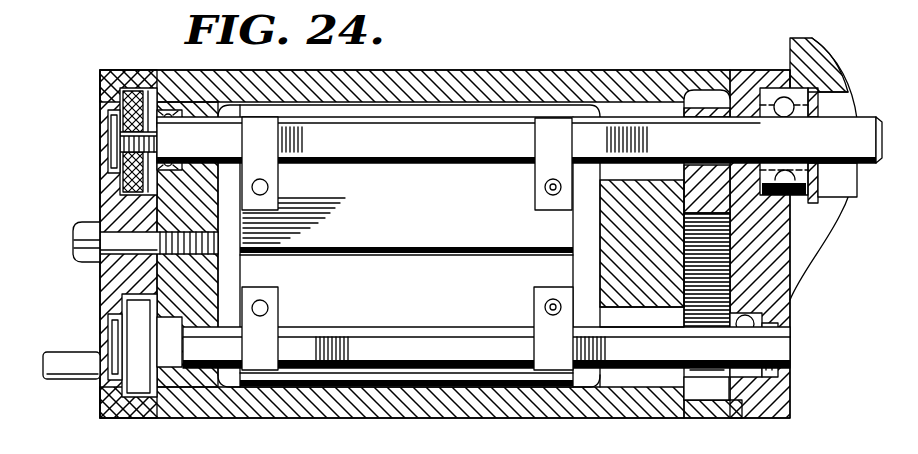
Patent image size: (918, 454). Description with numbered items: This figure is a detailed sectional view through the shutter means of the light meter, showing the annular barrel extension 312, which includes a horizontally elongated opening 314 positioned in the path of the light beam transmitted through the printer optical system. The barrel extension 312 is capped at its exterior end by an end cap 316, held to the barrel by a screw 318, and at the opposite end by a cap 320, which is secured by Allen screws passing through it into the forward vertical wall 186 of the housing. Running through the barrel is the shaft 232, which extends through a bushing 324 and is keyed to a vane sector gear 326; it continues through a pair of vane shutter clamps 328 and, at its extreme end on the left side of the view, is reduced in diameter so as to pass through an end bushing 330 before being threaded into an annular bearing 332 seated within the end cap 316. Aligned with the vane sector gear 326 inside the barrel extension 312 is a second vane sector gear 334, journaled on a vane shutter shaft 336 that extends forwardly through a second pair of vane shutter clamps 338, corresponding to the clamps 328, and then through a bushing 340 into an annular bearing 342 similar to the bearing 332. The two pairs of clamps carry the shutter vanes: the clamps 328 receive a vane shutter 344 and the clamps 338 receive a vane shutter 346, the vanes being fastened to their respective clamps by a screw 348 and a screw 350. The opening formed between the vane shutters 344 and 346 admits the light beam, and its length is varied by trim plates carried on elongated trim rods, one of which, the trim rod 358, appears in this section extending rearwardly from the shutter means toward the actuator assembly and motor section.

The forward wall 186 is at (828, 238).
The shaft 232 is at (867, 135).
The annular barrel extension 312 is at (406, 398).
The horizontally elongated opening 314 is at (590, 303).
The end cap 316 is at (110, 277).
The screw 318 is at (100, 224).
The cap 320 is at (768, 257).
The bushing 324 is at (767, 97).
The vane sector gear 326 is at (703, 110).
The vane shutter clamps 328 is at (268, 171).
The end bushing 330 is at (172, 113).
The annular bearing 332 is at (108, 118).
The second vane sector gear 334 is at (785, 300).
The vane shutter shaft 336 is at (662, 350).
The vane shutter clamps 338 is at (262, 297).
The bushing 340 is at (170, 353).
The annular bearing 342 is at (128, 395).
The vane shutter 344 is at (406, 225).
The vane shutter 346 is at (406, 278).
The screw 348 is at (553, 197).
The screw 350 is at (553, 298).
The trim rod 358 is at (60, 372).